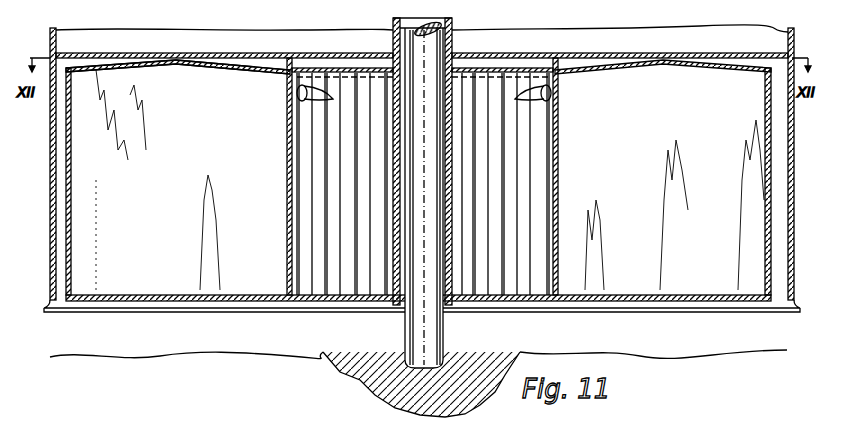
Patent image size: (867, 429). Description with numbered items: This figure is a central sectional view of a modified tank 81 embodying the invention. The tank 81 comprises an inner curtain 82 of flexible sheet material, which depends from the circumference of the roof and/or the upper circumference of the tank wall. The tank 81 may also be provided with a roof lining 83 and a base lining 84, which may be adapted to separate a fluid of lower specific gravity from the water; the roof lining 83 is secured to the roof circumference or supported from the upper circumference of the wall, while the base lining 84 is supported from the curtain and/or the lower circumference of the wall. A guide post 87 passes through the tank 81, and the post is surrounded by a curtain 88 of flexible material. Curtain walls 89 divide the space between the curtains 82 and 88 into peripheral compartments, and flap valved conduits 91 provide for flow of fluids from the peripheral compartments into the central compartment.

The tank 81 is at (813, 194).
The inner curtain 82 is at (766, 193).
The roof lining 83 is at (617, 67).
The base lining 84 is at (608, 296).
The guide post 87 is at (476, 197).
The curtain 88 is at (288, 190).
The curtain walls 89 is at (430, 180).
The nozzle 91 is at (333, 99).